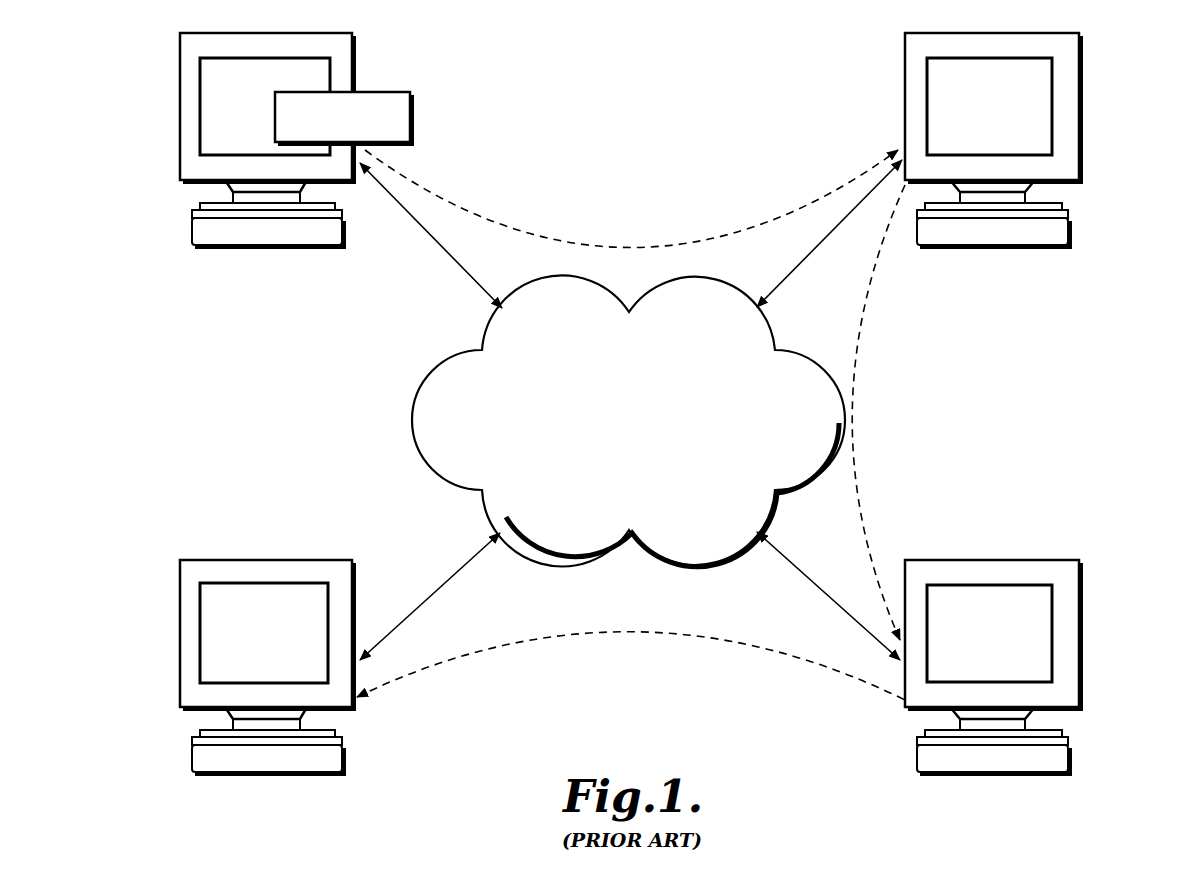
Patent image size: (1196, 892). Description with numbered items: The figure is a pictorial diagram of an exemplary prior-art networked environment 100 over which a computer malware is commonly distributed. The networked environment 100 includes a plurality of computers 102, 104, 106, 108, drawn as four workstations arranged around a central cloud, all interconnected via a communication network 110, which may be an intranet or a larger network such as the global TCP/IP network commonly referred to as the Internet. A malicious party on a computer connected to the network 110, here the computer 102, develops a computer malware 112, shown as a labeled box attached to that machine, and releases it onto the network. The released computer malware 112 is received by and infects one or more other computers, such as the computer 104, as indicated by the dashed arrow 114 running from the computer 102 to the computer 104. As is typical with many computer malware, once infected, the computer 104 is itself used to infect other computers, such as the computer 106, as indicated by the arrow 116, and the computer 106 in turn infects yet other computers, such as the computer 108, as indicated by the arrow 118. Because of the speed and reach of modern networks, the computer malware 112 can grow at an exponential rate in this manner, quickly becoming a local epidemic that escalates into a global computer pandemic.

The networked environment 100 is at (600, 60).
The computer 102 is at (180, 107).
The computer 104 is at (1082, 111).
The computer 106 is at (1082, 655).
The computer 108 is at (180, 648).
The communication network 110 is at (423, 403).
The computer malware 112 is at (413, 113).
The arrow 114 is at (613, 245).
The arrow 116 is at (852, 428).
The arrow 118 is at (628, 631).